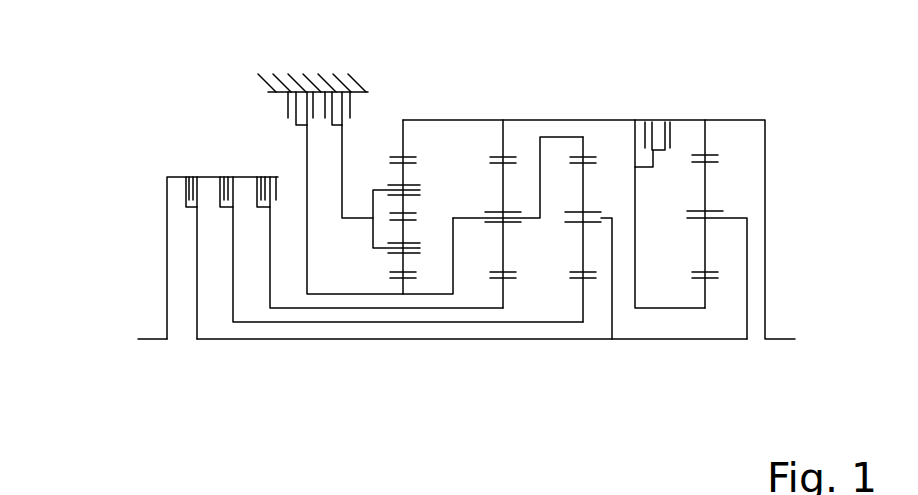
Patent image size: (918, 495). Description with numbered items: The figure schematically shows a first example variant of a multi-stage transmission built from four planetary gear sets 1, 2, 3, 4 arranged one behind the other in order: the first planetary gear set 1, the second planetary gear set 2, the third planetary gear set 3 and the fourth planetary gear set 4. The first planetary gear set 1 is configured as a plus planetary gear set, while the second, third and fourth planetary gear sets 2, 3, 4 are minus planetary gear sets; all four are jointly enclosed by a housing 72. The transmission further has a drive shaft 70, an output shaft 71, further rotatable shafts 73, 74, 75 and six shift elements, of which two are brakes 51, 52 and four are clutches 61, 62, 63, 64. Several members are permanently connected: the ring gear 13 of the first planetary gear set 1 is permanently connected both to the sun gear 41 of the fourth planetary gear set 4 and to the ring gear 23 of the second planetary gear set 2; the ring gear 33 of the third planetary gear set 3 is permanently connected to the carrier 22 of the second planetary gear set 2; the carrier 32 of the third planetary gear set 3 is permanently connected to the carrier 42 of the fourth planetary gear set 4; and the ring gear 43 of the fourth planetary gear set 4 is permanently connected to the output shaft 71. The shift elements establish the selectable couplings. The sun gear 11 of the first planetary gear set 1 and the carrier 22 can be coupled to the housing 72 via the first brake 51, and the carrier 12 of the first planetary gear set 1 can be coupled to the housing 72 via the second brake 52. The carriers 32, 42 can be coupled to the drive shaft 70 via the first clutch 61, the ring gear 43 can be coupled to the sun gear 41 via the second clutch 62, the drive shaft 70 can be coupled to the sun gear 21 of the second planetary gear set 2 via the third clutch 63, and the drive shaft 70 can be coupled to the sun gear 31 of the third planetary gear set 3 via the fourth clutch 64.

The first planetary gear set 1 is at (403, 344).
The second planetary gear set 2 is at (503, 344).
The third planetary gear set 3 is at (583, 344).
The fourth planetary gear set 4 is at (705, 344).
The sun gear of the first planetary gear set 11 is at (393, 282).
The carrier of the first planetary gear set 12 is at (372, 192).
The ring gear of the first planetary gear set 13 is at (408, 157).
The sun gear of the second planetary gear set 21 is at (510, 280).
The carrier of the second planetary gear set 22 is at (473, 222).
The ring gear of the second planetary gear set 23 is at (503, 150).
The sun gear of the third planetary gear set 31 is at (577, 280).
The carrier of the third planetary gear set 32 is at (603, 220).
The ring gear of the third planetary gear set 33 is at (590, 155).
The sun gear of the fourth planetary gear set 41 is at (710, 280).
The carrier of the fourth planetary gear set 42 is at (730, 215).
The ring gear of the fourth planetary gear set 43 is at (699, 152).
The first brake 51 is at (287, 102).
The second brake 52 is at (350, 112).
The first clutch 61 is at (182, 193).
The second clutch 62 is at (670, 128).
The third clutch 63 is at (252, 180).
The fourth clutch 64 is at (218, 180).
The drive shaft 70 is at (152, 342).
The output shaft 71 is at (767, 342).
The housing 72 is at (303, 80).
The rotatable shaft 73 is at (307, 265).
The rotatable shaft 74 is at (342, 200).
The rotatable shaft 75 is at (552, 120).